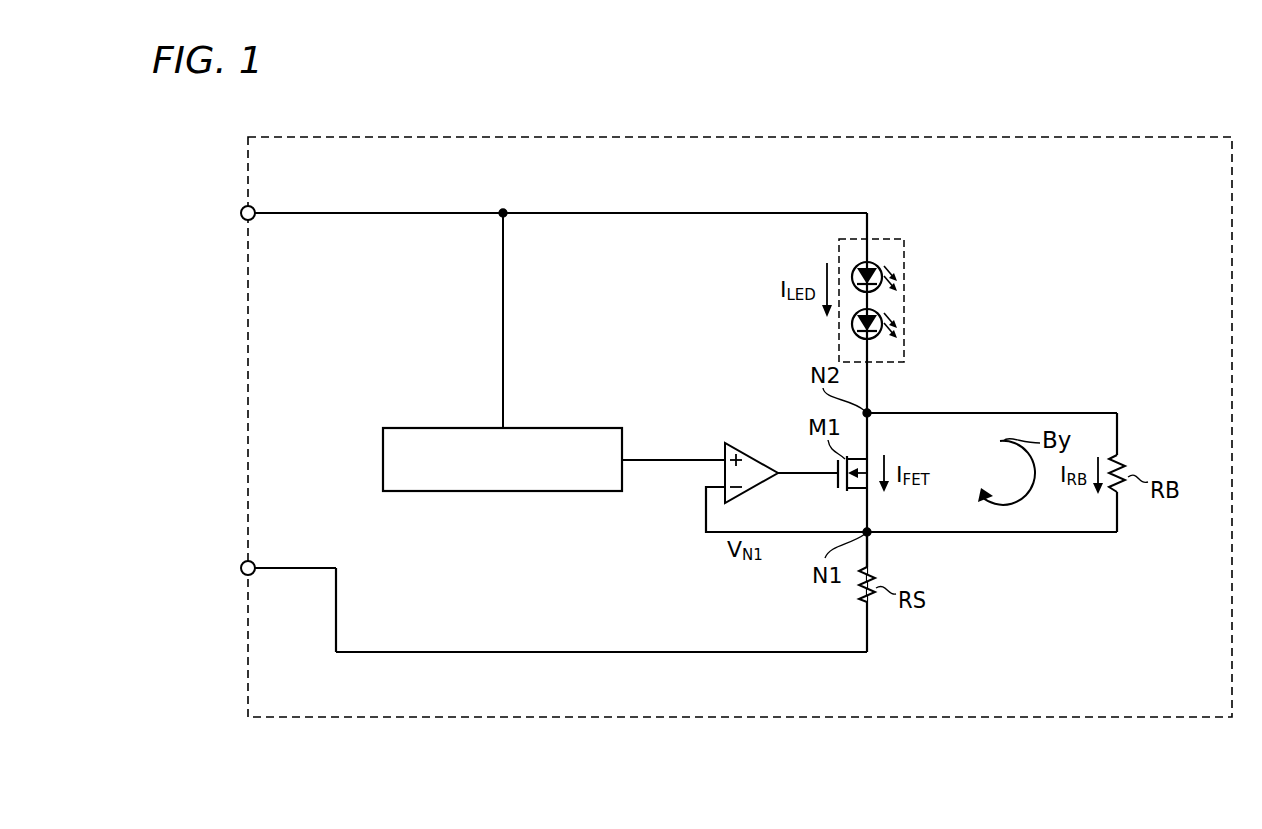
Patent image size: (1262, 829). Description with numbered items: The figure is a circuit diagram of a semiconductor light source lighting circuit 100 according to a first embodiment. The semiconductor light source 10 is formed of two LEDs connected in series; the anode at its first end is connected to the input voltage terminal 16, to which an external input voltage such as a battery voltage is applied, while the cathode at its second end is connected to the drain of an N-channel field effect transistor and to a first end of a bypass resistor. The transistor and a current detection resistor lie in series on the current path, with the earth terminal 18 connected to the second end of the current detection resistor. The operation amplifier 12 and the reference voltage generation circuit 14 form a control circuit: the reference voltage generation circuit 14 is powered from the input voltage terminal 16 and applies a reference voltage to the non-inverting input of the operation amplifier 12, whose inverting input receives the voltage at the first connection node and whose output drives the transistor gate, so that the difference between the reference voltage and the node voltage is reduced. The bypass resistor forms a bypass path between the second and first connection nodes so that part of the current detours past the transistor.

The semiconductor light source 10 is at (904, 250).
The operation amplifier 12 is at (745, 452).
The reference voltage generation circuit 14 is at (478, 491).
The input voltage terminal 16 is at (252, 219).
The earth terminal 18 is at (252, 562).
The semiconductor light source lighting circuit 100 is at (1073, 717).